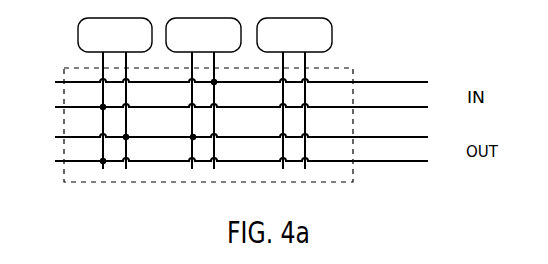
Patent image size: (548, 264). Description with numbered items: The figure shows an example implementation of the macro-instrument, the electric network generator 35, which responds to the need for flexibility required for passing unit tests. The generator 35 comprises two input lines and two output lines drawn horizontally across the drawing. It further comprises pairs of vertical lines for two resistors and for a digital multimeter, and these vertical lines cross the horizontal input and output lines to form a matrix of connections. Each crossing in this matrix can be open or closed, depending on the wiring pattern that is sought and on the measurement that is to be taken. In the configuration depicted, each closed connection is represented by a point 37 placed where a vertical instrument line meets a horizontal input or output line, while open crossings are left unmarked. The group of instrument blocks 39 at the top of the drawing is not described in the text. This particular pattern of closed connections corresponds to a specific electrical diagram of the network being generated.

The electric network generator 35 is at (177, 183).
The point 37 is at (100, 108).
The measurement instruments 39 is at (333, 35).